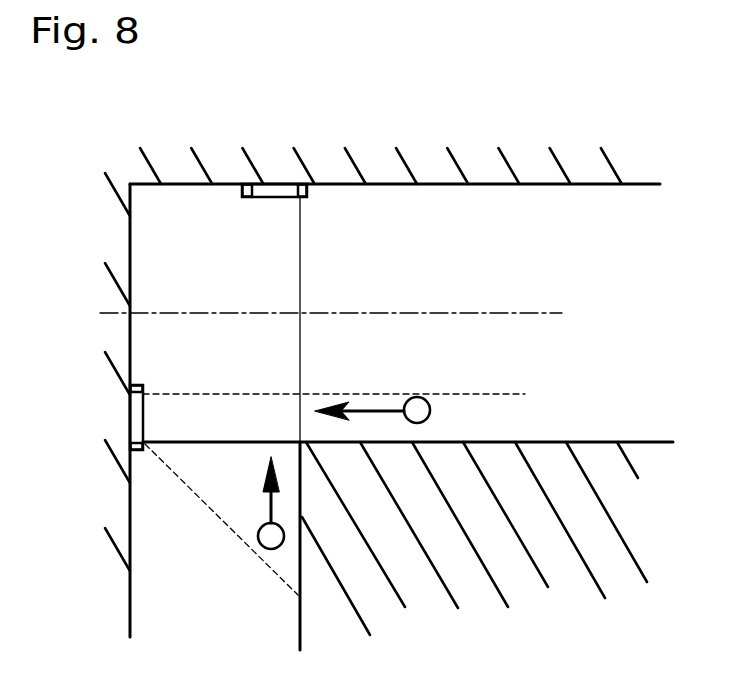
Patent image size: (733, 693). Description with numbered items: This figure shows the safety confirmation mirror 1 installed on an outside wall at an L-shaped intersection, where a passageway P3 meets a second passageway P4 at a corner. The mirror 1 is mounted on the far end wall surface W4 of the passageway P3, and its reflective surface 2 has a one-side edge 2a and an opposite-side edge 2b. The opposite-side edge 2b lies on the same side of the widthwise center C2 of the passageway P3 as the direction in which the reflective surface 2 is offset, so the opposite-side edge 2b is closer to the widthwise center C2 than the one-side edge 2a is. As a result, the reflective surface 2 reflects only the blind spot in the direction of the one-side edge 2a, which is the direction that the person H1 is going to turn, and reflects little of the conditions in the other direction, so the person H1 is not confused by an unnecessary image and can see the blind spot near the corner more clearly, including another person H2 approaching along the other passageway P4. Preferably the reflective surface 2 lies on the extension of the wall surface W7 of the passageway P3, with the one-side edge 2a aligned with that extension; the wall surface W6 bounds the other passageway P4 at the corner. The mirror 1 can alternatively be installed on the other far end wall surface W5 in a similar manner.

The safety confirmation mirror 1 is at (302, 202).
The reflective surface 2 is at (276, 198).
The one-side edge 2a is at (303, 184).
The opposite-side edge 2b is at (243, 184).
The far end wall surface W4 is at (130, 258).
The far end wall surface W5 is at (449, 186).
The wall surface W6 is at (298, 613).
The wall surface W7 is at (529, 442).
The passageway P3 is at (527, 200).
The wall body P4 is at (150, 523).
The widthwise center C2 is at (314, 313).
The person H1 is at (391, 411).
The moving object H2 is at (258, 503).